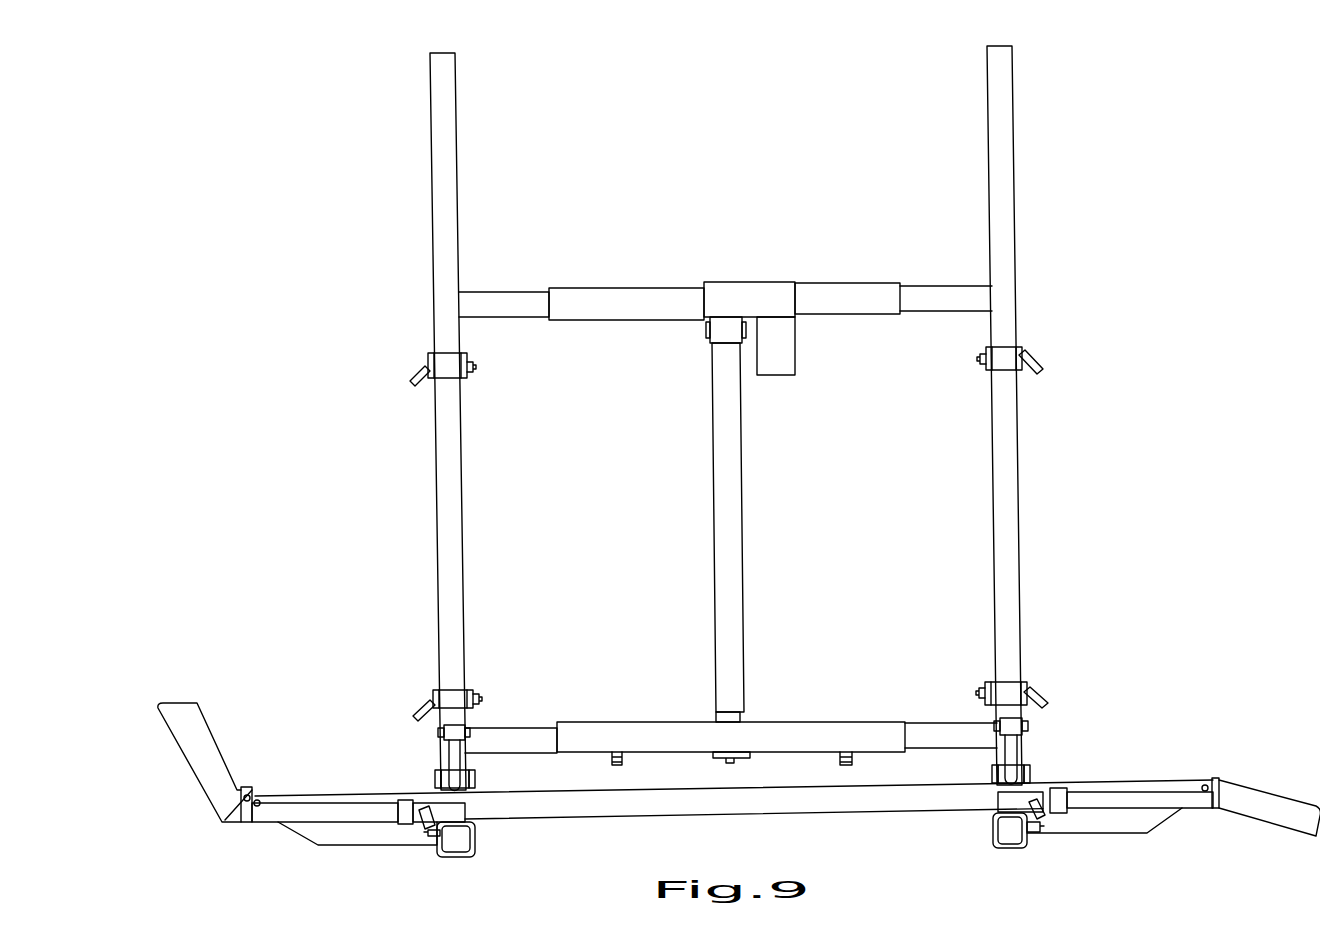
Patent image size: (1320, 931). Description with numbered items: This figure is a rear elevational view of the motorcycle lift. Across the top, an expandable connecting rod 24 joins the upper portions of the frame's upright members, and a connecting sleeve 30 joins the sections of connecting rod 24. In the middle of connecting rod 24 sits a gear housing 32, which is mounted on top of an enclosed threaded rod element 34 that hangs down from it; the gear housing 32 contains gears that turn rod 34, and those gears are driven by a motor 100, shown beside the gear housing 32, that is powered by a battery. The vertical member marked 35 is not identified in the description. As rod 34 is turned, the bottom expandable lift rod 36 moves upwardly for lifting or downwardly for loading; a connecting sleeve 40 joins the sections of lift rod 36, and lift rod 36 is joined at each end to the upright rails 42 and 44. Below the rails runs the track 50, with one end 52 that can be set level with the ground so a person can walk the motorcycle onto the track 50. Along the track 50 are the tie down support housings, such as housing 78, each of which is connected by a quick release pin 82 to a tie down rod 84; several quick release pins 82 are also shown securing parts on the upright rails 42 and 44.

The expandable connecting rod 24 is at (502, 296).
The connecting sleeve 30 is at (598, 302).
The gear housing 32 is at (741, 300).
The enclosed threaded rod element 34 is at (738, 716).
The center post 35 is at (734, 571).
The bottom expandable lift rod 36 is at (503, 732).
The connecting sleeve 40 is at (820, 732).
The upright rail 42 is at (1000, 220).
The upright rail 44 is at (445, 276).
The track 50 is at (918, 798).
The end 52 is at (1280, 796).
The tie down support housing 78 is at (1023, 800).
The quick release pin 82 is at (412, 383).
The tie down rod 84 is at (1192, 798).
The motor 100 is at (787, 352).